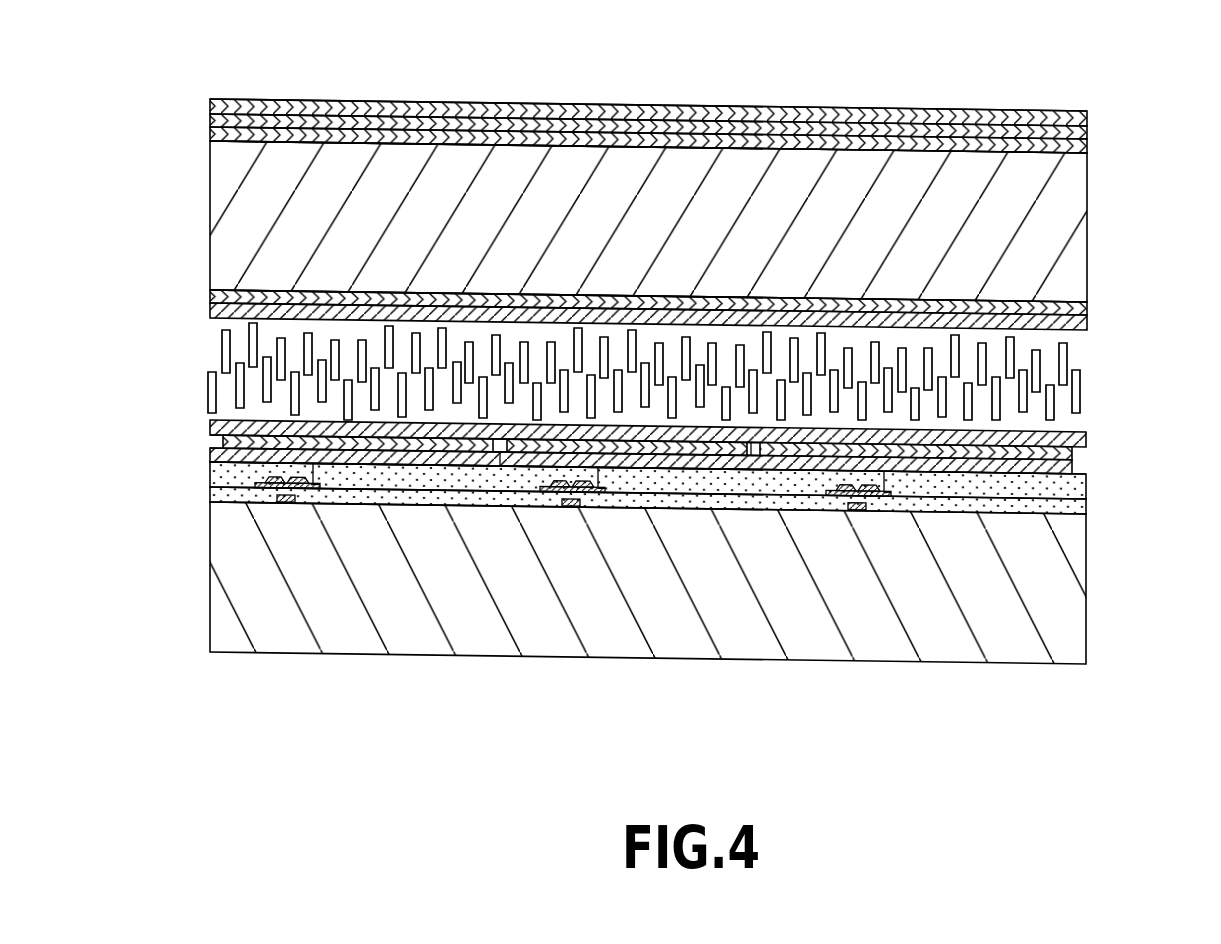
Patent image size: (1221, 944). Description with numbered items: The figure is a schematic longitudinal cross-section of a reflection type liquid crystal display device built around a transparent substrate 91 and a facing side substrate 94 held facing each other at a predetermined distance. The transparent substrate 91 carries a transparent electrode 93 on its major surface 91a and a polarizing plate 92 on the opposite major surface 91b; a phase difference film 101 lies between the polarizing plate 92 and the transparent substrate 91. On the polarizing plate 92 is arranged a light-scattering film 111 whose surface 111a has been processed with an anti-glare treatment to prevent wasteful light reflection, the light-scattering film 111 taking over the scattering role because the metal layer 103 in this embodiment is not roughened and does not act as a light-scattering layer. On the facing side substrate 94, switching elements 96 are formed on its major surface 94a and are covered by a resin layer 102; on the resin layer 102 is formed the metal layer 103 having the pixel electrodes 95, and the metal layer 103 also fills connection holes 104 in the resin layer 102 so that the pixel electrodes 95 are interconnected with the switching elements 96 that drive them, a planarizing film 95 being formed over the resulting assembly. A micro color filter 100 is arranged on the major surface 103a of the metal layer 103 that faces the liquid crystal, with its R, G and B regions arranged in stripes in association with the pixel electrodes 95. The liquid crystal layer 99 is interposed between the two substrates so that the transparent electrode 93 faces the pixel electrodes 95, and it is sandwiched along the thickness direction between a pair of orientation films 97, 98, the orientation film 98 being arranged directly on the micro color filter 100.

The transparent substrate 91 is at (228, 180).
The major surface 91a is at (250, 293).
The opposite major surface 91b is at (216, 118).
The polarizing plate 92 is at (370, 120).
The transparent electrode 93 is at (218, 298).
The facing side substrate 94 is at (1070, 610).
The major surface 94a is at (1050, 512).
The pixel electrode 95 is at (357, 458).
The switching element 96 is at (296, 516).
The orientation film 97 is at (1084, 321).
The orientation film 98 is at (1088, 438).
The liquid crystal layer 99 is at (1086, 378).
The micro color filter 100 is at (224, 442).
The phase difference film 101 is at (1082, 145).
The resin layer 102 is at (1076, 496).
The metal layer 103 is at (1013, 470).
The major surface 103a is at (752, 447).
The connection hole 104 is at (600, 468).
The light-scattering film 111 is at (710, 112).
The surface 111a is at (548, 104).
The red color filter R is at (392, 440).
The green color filter G is at (683, 450).
The blue color filter B is at (963, 462).